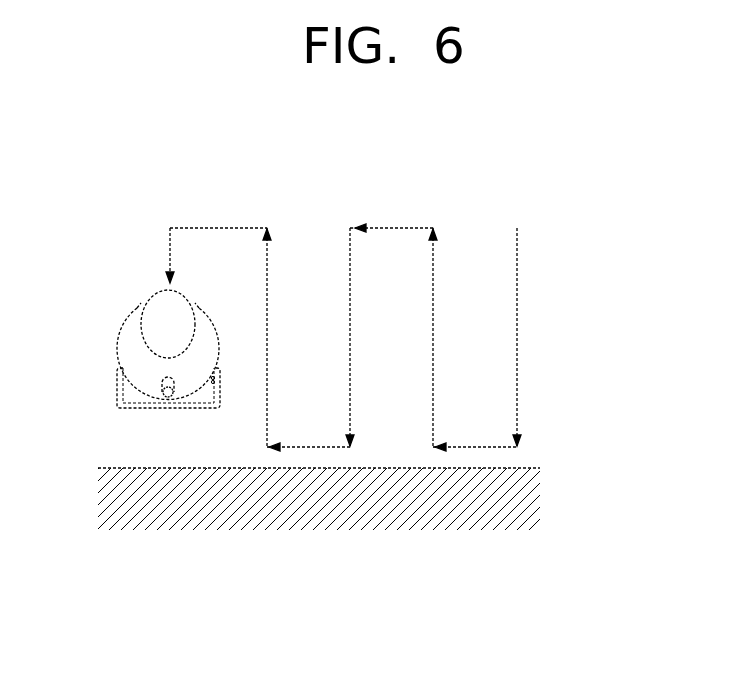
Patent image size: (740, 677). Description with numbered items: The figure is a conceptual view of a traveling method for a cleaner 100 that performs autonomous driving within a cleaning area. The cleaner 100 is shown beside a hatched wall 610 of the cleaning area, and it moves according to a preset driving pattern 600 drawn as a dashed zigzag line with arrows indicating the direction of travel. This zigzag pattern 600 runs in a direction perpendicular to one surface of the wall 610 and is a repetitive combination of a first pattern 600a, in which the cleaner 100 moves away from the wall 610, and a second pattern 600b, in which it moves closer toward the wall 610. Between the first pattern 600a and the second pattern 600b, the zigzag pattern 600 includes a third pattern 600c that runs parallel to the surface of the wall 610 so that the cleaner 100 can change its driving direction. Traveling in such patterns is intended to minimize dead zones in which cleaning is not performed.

The cleaner 100 is at (113, 310).
The driving pattern 600 is at (381, 380).
The first pattern 600a is at (268, 273).
The second pattern 600b is at (352, 273).
The third pattern 600c is at (316, 448).
The wall 610 is at (535, 498).